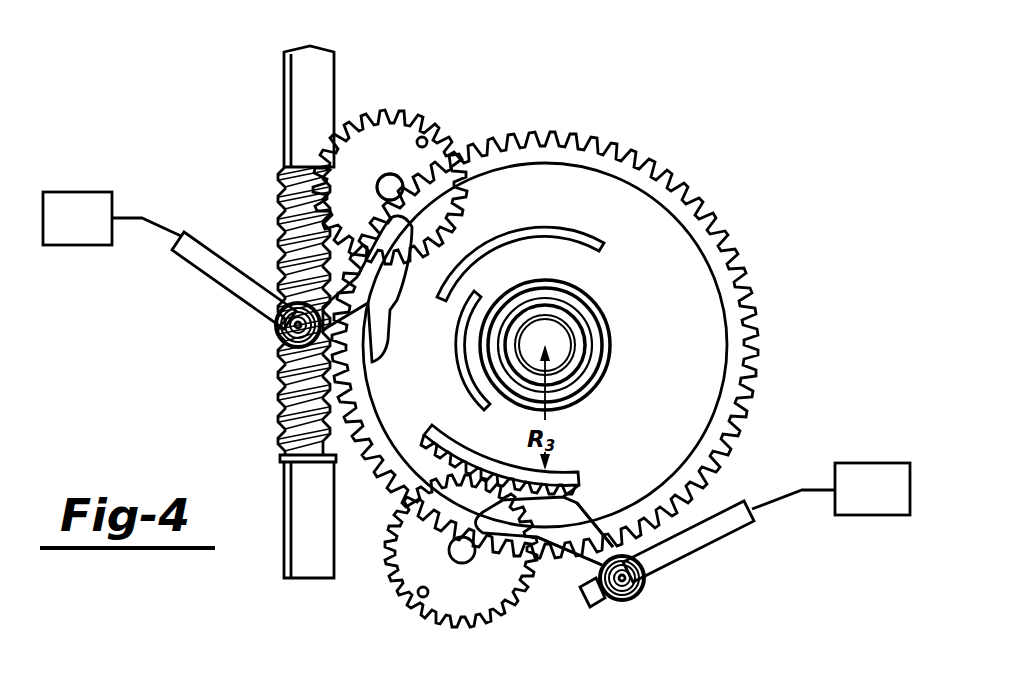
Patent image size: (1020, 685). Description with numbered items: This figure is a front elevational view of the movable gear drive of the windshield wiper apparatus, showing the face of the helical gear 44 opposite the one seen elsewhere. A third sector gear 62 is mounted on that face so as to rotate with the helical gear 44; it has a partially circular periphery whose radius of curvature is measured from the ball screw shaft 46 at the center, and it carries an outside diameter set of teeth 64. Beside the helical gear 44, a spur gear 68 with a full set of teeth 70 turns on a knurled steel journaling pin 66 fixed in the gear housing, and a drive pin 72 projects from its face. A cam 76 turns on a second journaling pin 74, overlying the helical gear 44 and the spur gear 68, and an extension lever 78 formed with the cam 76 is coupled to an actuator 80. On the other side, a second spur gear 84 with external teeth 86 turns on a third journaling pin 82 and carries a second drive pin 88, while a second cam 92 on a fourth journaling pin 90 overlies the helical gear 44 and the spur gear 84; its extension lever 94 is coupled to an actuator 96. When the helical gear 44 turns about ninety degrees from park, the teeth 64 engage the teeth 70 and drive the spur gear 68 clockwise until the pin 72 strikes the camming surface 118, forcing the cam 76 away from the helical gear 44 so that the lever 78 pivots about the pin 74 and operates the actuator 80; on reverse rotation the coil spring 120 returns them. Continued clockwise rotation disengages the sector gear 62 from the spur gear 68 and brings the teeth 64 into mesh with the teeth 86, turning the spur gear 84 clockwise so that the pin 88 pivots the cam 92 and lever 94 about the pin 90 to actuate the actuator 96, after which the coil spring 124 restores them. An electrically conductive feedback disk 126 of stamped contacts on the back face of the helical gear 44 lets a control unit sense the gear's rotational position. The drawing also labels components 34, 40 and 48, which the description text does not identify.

The shaft 34 is at (297, 62).
The worm 40 is at (269, 310).
The helical gear 44 is at (578, 345).
The ball screw shaft 46 is at (565, 343).
The gear teeth 48 is at (760, 366).
The third sector gear 62 is at (578, 468).
The outside diameter set of teeth 64 is at (541, 535).
The journaling pin 66 is at (460, 564).
The spur gear 68 is at (436, 561).
The set of teeth 70 is at (395, 590).
The drive pin 72 is at (422, 598).
The second journaling pin 74 is at (620, 600).
The cam 76 is at (578, 568).
The extension lever 78 is at (730, 525).
The actuator 80 is at (883, 515).
The third journaling pin 82 is at (378, 183).
The second spur gear 84 is at (425, 162).
The external set of teeth 86 is at (478, 196).
The second drive pin 88 is at (422, 136).
The fourth journaling pin 90 is at (290, 343).
The second cam 92 is at (384, 352).
The extension lever 94 is at (240, 285).
The actuator 96 is at (78, 246).
The camming surface 118 is at (490, 518).
The coil spring 120 is at (408, 228).
The coil spring 124 is at (285, 240).
The feedback disk 126 is at (590, 273).